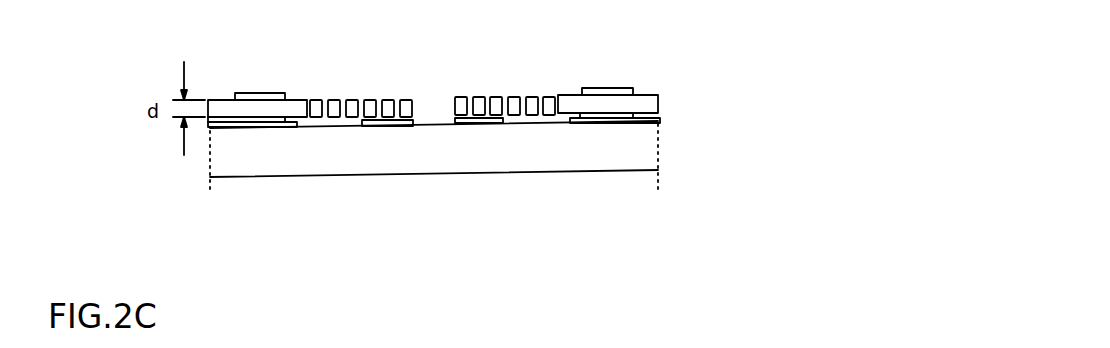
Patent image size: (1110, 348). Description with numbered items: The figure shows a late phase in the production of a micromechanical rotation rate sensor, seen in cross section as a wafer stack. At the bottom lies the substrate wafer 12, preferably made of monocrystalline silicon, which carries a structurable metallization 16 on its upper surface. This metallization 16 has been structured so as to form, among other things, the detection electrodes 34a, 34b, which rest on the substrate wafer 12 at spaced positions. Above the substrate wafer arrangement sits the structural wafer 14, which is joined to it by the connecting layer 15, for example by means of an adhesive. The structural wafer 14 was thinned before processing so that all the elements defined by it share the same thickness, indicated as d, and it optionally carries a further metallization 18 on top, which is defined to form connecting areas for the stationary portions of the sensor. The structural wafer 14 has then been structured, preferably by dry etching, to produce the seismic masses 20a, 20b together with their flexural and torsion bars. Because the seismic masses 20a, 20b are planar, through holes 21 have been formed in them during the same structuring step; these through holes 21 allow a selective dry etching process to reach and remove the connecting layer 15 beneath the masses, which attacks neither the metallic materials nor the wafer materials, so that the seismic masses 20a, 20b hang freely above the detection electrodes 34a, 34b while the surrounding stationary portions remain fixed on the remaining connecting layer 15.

The substrate wafer 12 is at (660, 152).
The structural wafer 14 is at (663, 97).
The connecting layer 15 is at (658, 112).
The metallization 16 is at (658, 120).
The metallization 18 is at (612, 88).
The seismic mass 20a is at (353, 100).
The seismic mass 20b is at (460, 97).
The through holes 21 is at (520, 97).
The detection electrode 34a is at (485, 123).
The detection electrode 34b is at (385, 127).